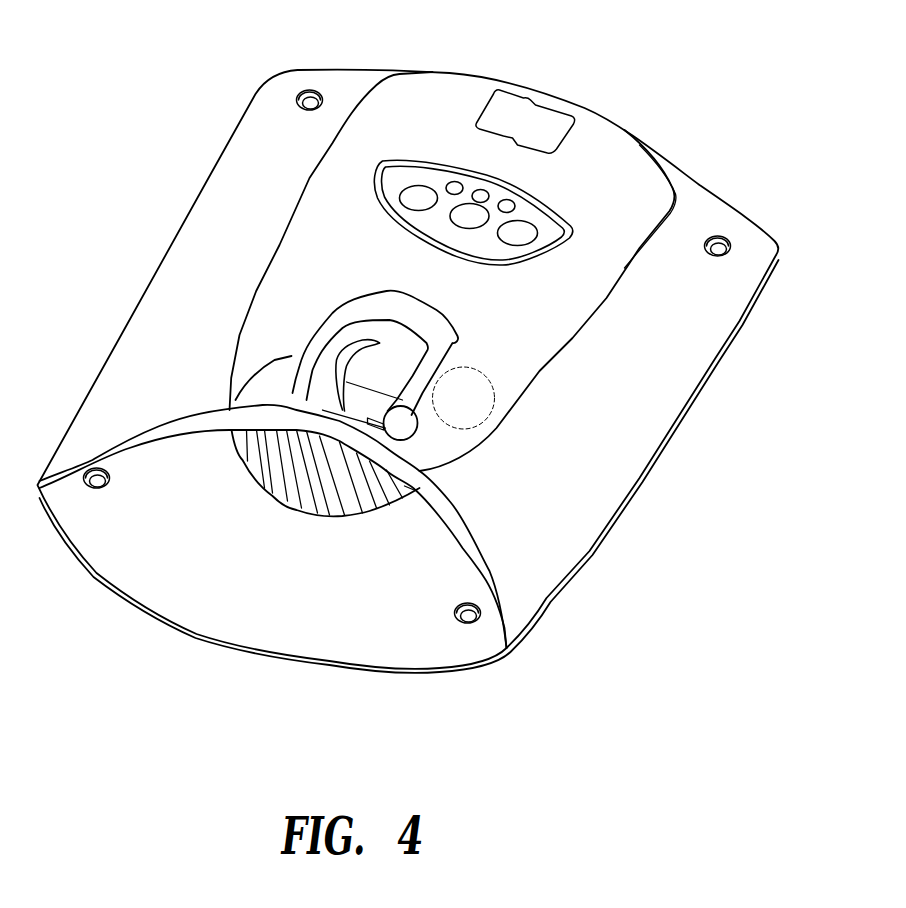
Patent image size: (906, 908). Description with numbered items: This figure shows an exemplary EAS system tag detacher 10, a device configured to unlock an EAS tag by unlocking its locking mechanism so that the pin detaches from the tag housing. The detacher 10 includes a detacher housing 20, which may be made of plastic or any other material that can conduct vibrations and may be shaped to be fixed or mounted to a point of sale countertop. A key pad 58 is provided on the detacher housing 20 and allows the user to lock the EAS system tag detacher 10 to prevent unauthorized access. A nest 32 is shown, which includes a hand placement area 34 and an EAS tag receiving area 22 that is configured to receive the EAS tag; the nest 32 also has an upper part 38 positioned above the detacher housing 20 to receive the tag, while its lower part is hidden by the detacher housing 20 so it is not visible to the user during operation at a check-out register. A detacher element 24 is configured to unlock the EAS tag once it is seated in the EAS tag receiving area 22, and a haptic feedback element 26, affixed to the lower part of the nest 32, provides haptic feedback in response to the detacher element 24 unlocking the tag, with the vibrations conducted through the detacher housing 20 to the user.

The EAS system tag detacher 10 is at (203, 100).
The detacher housing 20 is at (560, 515).
The EAS tag receiving area 22 is at (347, 418).
The detacher element 24 is at (376, 355).
The haptic feedback element 26 is at (452, 412).
The nest 32 is at (243, 380).
The hand placement area 34 is at (280, 480).
The upper part 38 is at (453, 350).
The key pad 58 is at (393, 187).